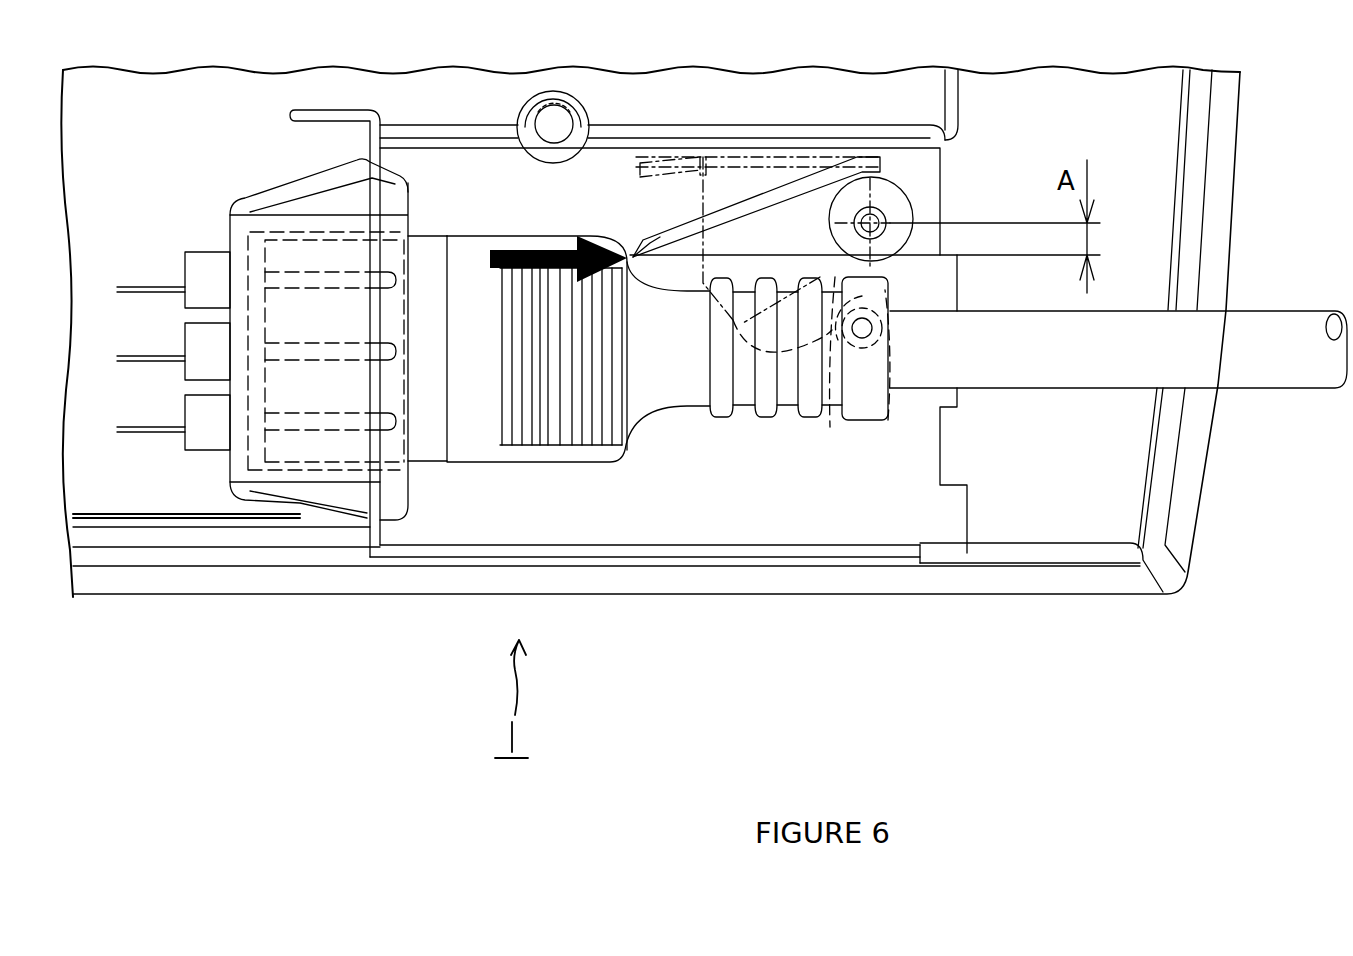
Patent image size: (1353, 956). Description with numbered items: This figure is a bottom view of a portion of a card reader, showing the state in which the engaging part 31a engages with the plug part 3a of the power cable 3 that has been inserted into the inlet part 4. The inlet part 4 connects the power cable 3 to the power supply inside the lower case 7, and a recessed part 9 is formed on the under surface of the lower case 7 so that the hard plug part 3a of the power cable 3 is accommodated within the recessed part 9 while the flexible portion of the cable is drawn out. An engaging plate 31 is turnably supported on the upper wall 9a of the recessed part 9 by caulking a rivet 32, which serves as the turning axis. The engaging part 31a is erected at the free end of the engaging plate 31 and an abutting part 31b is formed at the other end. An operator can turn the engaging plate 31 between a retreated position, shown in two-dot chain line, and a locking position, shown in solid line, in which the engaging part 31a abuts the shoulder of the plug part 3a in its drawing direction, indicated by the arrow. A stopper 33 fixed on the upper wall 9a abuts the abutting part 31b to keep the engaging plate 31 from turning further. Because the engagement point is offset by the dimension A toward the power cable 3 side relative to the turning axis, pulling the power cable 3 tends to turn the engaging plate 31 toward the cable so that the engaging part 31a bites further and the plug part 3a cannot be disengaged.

The power cable 3 is at (962, 372).
The plug part 3a is at (498, 455).
The inlet part 4 is at (230, 222).
The lower case 7 is at (293, 583).
The recessed part 9 is at (741, 510).
The upper wall 9a is at (621, 528).
The engaging plate 31 is at (771, 213).
The engaging part 31a is at (650, 237).
The abutting part 31b is at (835, 427).
The rivet 32 is at (887, 210).
The stopper 33 is at (887, 420).